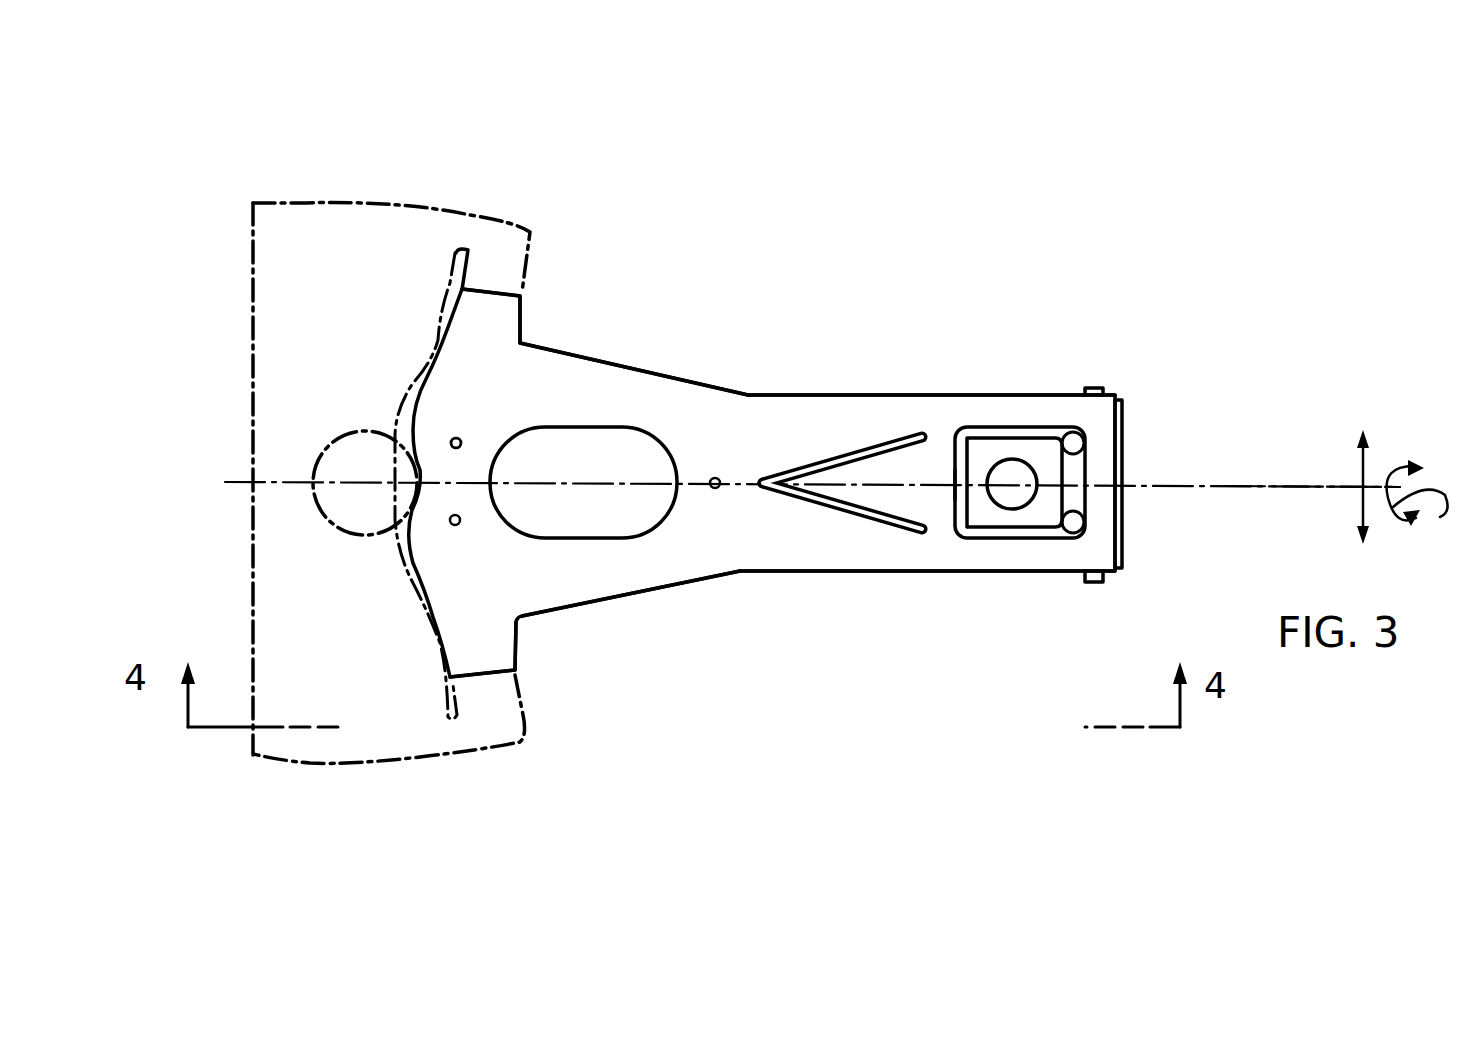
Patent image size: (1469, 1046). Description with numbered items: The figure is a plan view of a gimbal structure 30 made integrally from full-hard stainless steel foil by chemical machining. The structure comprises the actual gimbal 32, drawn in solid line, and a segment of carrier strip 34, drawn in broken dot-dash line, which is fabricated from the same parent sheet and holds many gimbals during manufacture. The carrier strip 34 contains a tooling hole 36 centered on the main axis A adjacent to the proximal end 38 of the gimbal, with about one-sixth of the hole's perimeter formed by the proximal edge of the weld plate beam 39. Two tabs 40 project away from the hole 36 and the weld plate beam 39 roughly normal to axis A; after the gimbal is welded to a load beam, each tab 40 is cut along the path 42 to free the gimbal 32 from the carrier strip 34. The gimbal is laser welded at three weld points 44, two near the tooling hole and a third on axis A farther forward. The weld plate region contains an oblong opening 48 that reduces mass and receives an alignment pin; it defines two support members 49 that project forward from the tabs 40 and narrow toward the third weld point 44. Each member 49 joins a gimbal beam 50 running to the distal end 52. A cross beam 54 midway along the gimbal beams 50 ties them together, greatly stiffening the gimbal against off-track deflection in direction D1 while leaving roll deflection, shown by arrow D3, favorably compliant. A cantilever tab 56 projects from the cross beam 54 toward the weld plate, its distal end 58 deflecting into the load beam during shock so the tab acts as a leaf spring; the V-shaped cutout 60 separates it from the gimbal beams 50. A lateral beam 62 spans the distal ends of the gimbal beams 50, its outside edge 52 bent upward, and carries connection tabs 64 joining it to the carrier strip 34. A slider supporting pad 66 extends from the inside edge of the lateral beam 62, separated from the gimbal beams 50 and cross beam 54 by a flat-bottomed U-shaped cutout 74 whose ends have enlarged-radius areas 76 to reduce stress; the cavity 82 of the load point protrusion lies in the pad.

The gimbal structure 30 is at (762, 439).
The gimbal 32 is at (750, 388).
The carrier strip 34 is at (249, 368).
The hole 36 is at (357, 462).
The proximal end 38 is at (457, 437).
The weld plate beam 39 is at (443, 545).
The tabs 40 is at (497, 317).
The cutting path 42 is at (487, 280).
The weld points 44 is at (482, 425).
The opening 48 is at (617, 463).
The support members 49 is at (607, 393).
The gimbal beams 50 is at (882, 410).
The distal end 52 is at (1120, 477).
The cross beam 54 is at (930, 450).
The cantilever tab 56 is at (856, 493).
The distal end of cantilever tab 58 is at (826, 542).
The cutout 60 is at (780, 467).
The lateral beam 62 is at (1120, 462).
The connection tabs 64 is at (1096, 388).
The slider supporting pad 66 is at (953, 500).
The cutout 74 is at (1003, 530).
The enlarged radius area 76 is at (1068, 440).
The cavity 82 is at (1027, 503).
The main axis A is at (1223, 487).
The off-track direction arrow D1 is at (1367, 470).
The roll deflection arrow D3 is at (1427, 510).